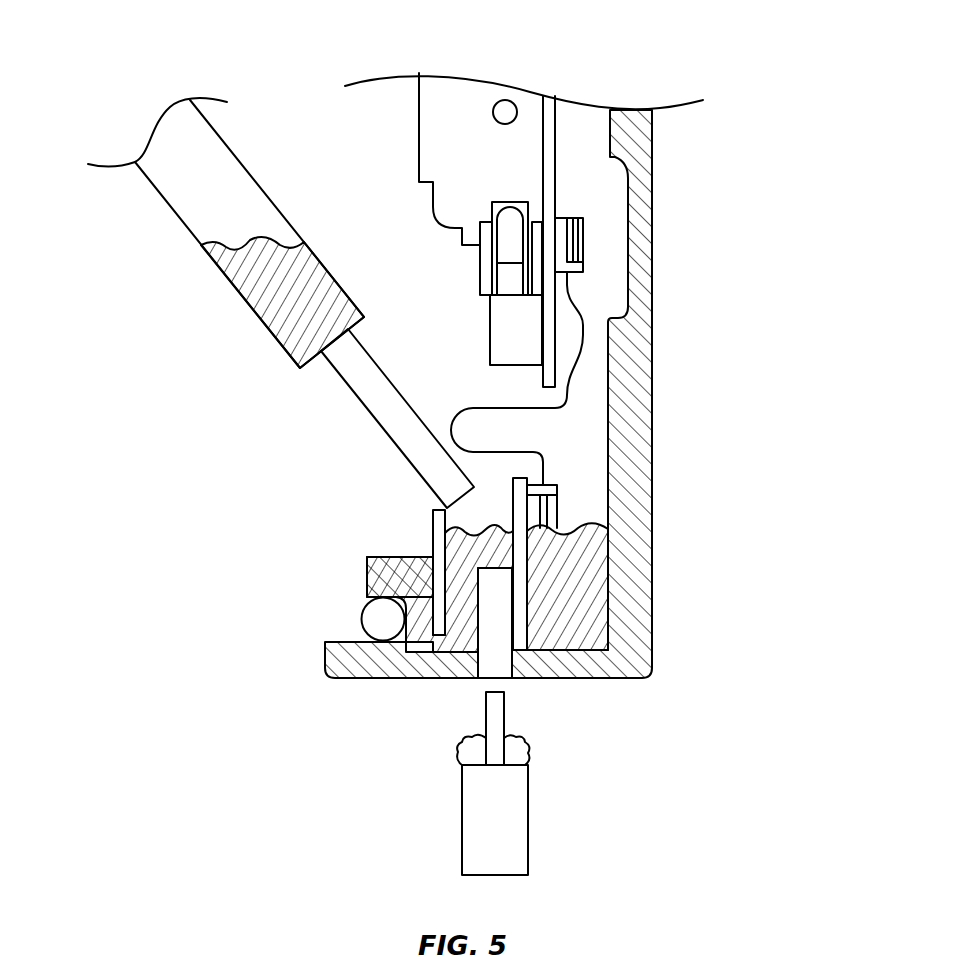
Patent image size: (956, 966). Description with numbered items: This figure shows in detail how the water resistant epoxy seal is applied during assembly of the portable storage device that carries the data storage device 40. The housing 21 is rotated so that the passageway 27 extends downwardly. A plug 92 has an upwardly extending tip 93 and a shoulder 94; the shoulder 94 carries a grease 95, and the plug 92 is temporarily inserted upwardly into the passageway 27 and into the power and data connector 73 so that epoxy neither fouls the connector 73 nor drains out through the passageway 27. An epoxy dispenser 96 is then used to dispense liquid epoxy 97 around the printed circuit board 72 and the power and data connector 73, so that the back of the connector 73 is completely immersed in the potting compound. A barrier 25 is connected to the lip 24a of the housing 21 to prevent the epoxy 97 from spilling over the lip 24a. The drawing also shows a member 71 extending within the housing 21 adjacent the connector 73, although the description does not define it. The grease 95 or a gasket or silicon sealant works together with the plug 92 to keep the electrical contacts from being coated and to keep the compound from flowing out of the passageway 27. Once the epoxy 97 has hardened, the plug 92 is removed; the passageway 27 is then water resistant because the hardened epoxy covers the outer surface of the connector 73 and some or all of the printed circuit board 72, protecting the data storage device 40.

The data storage device 40 is at (453, 105).
The housing 21 is at (635, 340).
The epoxy dispenser 96 is at (183, 228).
The liquid epoxy 97 is at (580, 578).
The lead member 71 is at (567, 408).
The barrier 25 is at (432, 518).
The lip 24a is at (383, 557).
The power and data connector 73 is at (477, 605).
The printed circuit board 72 is at (638, 655).
The passageway 27 is at (490, 670).
The tip 93 is at (504, 710).
The shoulder 94 is at (515, 762).
The grease 95 is at (460, 752).
The plug 92 is at (528, 825).